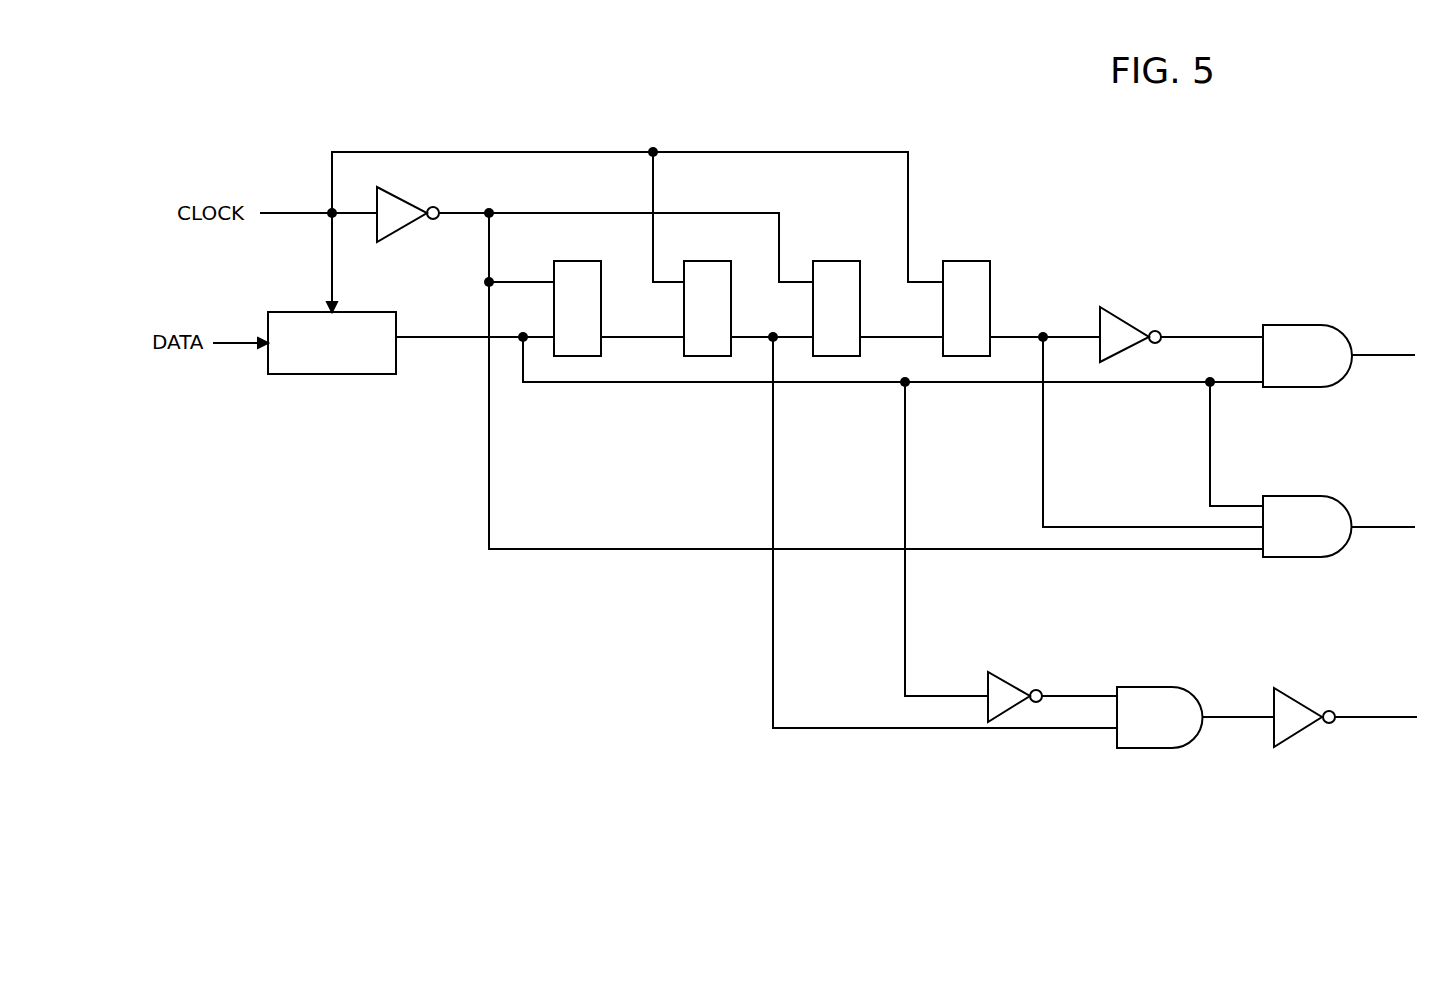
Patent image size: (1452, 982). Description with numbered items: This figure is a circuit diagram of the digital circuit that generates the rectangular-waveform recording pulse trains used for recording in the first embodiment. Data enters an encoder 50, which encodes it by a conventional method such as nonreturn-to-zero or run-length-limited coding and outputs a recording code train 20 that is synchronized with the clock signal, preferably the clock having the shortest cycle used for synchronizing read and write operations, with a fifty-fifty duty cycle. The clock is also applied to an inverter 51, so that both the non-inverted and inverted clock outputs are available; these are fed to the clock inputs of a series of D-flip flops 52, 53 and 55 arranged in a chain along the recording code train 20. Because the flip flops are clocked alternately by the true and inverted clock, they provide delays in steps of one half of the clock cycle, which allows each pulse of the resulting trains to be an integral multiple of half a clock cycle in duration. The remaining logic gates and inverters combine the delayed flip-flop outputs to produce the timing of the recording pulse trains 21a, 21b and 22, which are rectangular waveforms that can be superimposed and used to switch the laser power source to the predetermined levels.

The recording code train 20 is at (453, 337).
The recording pulse train 21a is at (1405, 355).
The recording pulse train 21b is at (1409, 512).
The recording pulse train 22 is at (1397, 717).
The encoder 50 is at (343, 374).
The inverter 51 is at (405, 197).
The D-flip flop 52 is at (584, 355).
The D-flip flop 53 is at (708, 355).
The D-flip flop 55 is at (838, 355).